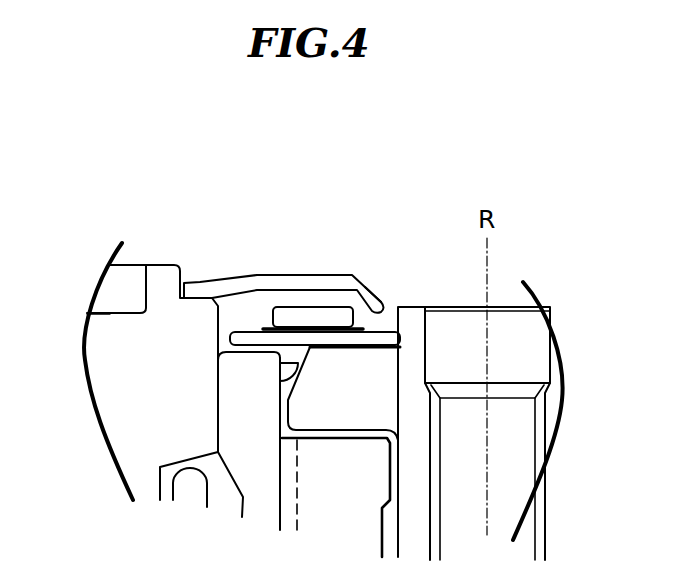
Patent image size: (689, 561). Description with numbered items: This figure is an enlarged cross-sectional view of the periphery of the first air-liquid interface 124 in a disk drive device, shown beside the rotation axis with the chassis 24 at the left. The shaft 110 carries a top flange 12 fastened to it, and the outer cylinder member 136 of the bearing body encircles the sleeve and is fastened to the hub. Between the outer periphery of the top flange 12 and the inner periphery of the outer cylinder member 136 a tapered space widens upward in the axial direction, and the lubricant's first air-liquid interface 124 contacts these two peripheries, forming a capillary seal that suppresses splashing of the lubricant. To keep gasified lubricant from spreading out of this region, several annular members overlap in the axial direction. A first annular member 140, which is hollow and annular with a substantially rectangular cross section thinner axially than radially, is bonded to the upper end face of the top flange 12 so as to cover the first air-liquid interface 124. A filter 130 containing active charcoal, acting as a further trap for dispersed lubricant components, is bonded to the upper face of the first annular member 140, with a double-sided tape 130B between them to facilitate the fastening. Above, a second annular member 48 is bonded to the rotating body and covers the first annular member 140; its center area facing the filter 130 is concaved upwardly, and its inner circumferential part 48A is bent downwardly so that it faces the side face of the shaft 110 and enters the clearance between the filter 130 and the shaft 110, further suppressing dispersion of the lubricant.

The top flange 12 is at (387, 370).
The chassis 24 is at (170, 333).
The second annular member 48 is at (198, 290).
The inner circumferential part 48A is at (381, 293).
The shaft 110 is at (412, 318).
The first air-liquid interface 124 is at (288, 380).
The filter 130 is at (297, 318).
The double-sided tape 130B is at (340, 324).
The outer cylinder member 136 is at (248, 400).
The first annular member 140 is at (252, 337).